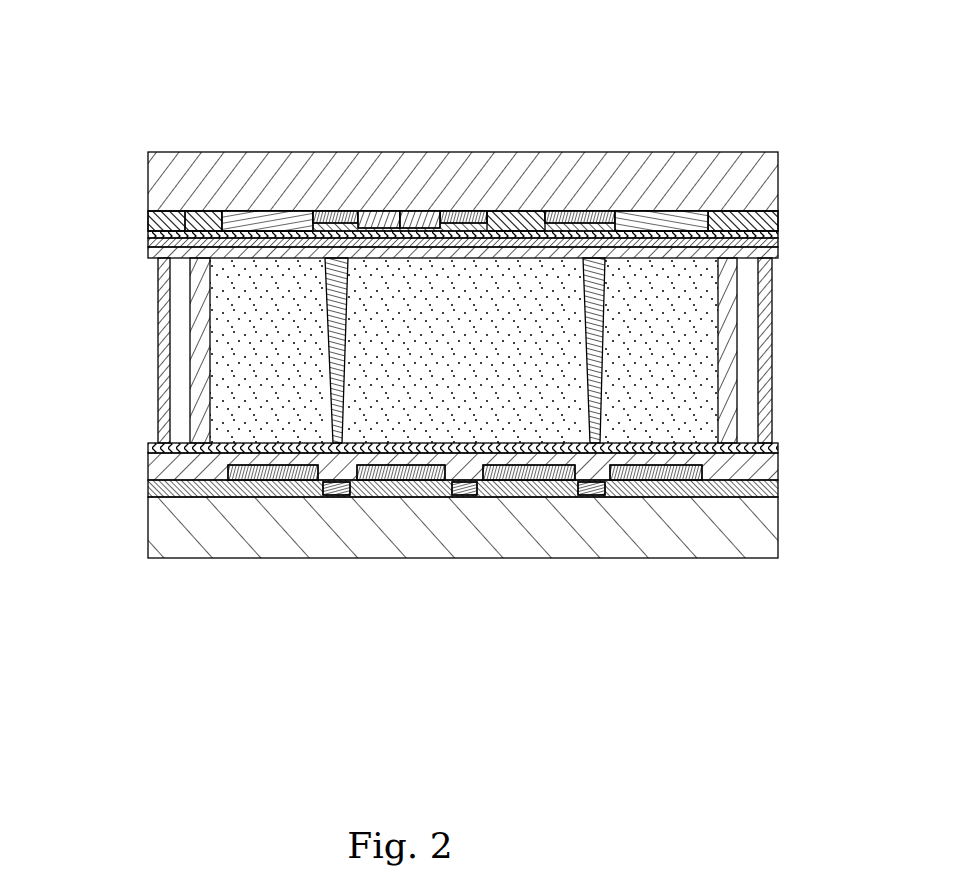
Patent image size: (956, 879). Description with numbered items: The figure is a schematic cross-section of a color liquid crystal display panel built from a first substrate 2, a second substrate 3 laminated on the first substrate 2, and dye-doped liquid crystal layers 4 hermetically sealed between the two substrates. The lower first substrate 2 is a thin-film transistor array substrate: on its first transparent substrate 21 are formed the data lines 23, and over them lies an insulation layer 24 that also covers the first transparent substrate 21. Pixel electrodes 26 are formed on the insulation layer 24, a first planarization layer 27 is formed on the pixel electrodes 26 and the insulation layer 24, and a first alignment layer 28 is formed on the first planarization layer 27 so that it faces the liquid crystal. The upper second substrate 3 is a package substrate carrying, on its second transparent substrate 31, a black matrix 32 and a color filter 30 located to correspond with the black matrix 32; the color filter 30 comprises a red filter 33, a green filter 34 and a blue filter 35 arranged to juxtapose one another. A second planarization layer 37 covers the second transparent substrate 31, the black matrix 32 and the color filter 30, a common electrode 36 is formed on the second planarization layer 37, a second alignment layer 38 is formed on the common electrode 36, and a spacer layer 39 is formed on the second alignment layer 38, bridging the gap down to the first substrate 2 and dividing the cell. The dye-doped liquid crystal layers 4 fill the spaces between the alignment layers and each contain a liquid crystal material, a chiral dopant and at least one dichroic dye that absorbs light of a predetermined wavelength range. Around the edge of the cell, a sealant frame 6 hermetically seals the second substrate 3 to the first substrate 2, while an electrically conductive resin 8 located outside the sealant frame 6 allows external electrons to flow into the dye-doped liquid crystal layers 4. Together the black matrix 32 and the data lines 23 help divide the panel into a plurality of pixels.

The first substrate 2 is at (460, 555).
The second substrate 3 is at (439, 129).
The dye-doped liquid crystal layers 4 is at (258, 397).
The sealant frame 6 is at (202, 318).
The electrically conductive resin 8 is at (162, 277).
The first transparent substrate 21 is at (143, 621).
The data lines 23 is at (337, 488).
The insulation layer 24 is at (256, 470).
The pixel electrodes 26 is at (389, 488).
The first planarization layer 27 is at (172, 470).
The first alignment layer 28 is at (196, 447).
The color filter 30 is at (554, 140).
The second transparent substrate 31 is at (301, 195).
The black matrix 32 is at (346, 212).
The red filter 33 is at (653, 163).
The green filter 34 is at (433, 212).
The blue filter 35 is at (548, 212).
The common electrode 36 is at (188, 214).
The second planarization layer 37 is at (214, 212).
The second alignment layer 38 is at (158, 222).
The spacer layer 39 is at (373, 212).